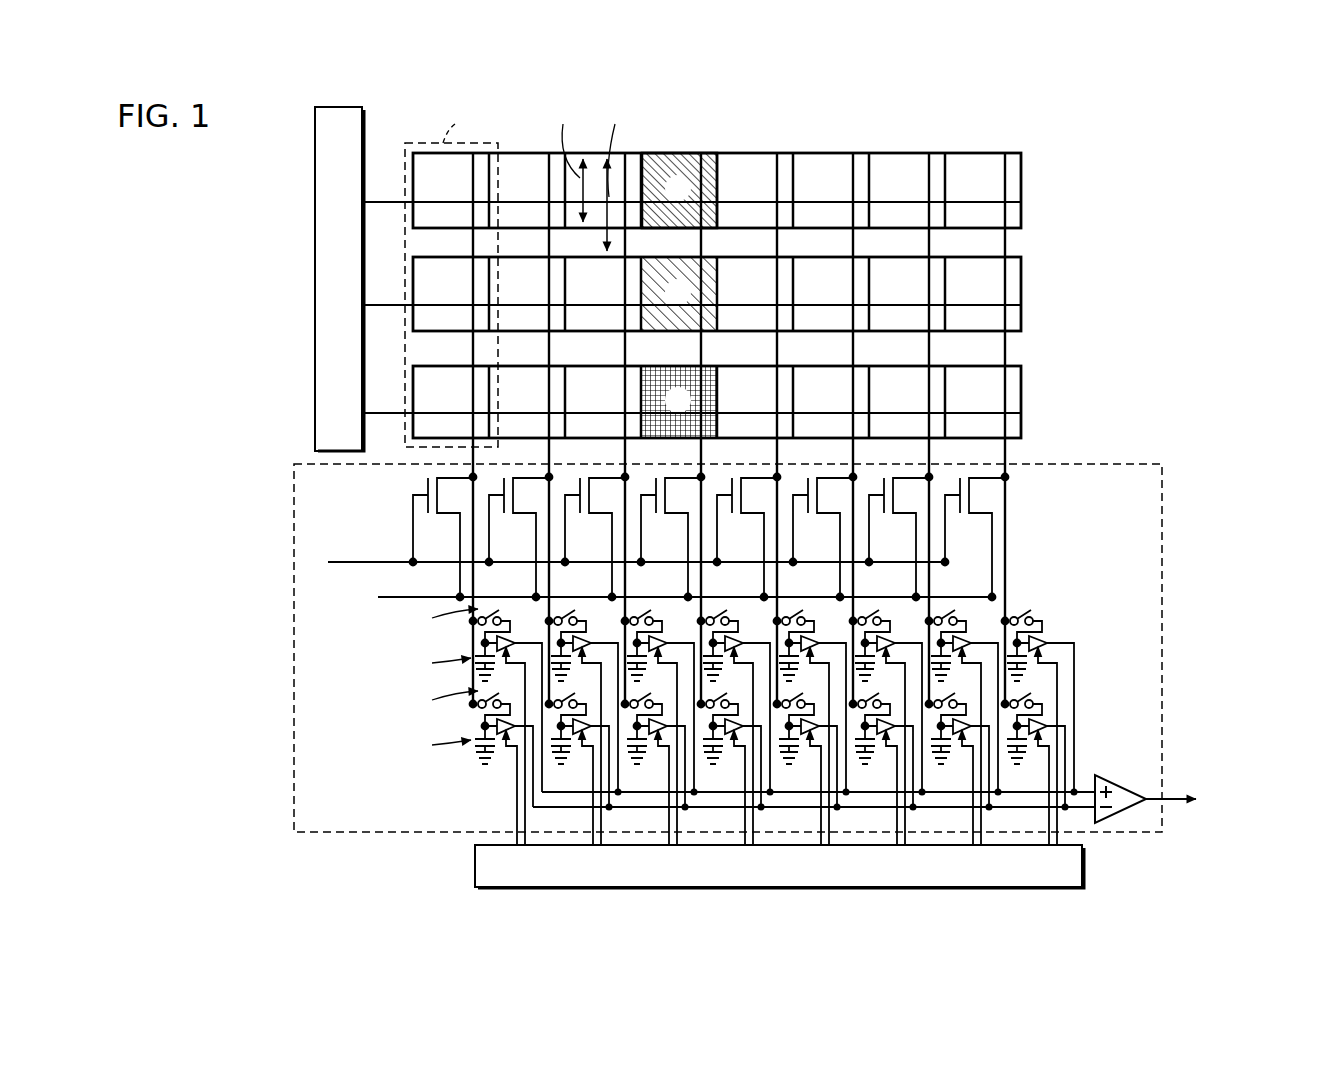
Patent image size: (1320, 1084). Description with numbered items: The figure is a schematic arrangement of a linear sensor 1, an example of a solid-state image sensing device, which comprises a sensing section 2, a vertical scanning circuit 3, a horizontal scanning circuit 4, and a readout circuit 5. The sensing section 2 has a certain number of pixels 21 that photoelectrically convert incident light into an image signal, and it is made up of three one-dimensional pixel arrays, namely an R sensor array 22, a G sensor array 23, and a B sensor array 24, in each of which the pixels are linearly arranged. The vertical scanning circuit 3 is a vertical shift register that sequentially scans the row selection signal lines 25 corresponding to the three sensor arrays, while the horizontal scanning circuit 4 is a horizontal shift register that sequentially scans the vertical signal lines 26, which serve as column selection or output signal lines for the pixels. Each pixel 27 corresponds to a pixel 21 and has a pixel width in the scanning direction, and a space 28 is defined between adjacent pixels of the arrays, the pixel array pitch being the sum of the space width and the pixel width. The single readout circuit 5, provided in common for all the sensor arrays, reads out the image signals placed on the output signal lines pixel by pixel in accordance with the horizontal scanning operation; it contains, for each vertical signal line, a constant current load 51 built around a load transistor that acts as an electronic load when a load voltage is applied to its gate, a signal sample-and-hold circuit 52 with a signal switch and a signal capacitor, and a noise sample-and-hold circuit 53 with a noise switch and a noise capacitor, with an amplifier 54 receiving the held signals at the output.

The linear sensor 1 is at (1202, 384).
The sensing section 2 is at (1132, 152).
The vertical scanning circuit 3 is at (314, 252).
The horizontal scanning circuit 4 is at (1083, 870).
The readout circuit 5 is at (1163, 493).
The pixel 21 is at (893, 288).
The R sensor array 22 is at (1034, 178).
The G sensor array 23 is at (1034, 286).
The B sensor array 24 is at (1034, 398).
The row selection signal line 25 is at (379, 202).
The vertical signal line 26 is at (1008, 450).
The pixel 27 is at (677, 168).
The space 28 is at (717, 186).
The constant current load 51 is at (890, 520).
The signal sample-and-hold circuit 52 is at (975, 611).
The noise sample-and-hold circuit 53 is at (975, 697).
The amplifier 54 is at (1120, 779).